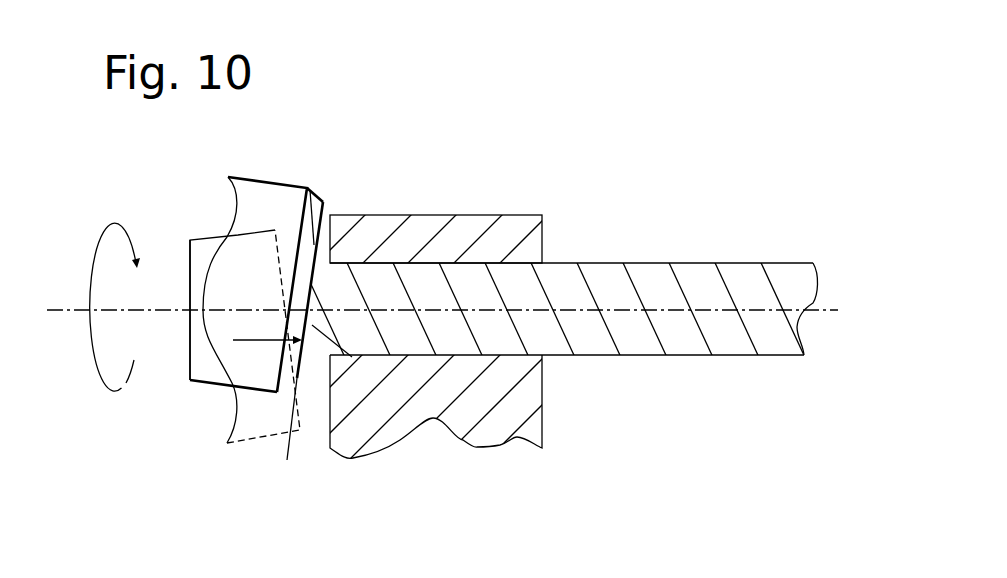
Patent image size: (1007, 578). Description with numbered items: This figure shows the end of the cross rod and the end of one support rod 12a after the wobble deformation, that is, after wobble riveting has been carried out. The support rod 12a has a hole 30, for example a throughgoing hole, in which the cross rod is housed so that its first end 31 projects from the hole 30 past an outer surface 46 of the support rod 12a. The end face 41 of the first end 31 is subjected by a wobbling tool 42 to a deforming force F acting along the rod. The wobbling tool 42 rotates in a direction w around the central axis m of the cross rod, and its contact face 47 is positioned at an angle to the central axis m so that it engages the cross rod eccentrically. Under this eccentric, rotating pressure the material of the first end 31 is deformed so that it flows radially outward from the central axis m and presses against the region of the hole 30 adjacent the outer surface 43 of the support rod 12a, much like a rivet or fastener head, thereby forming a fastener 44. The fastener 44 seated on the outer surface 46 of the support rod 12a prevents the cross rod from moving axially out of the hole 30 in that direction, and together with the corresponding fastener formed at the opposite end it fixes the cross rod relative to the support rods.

The support rod 12a is at (502, 238).
The hole 30 is at (406, 253).
The first end 31 is at (325, 240).
The end face 41 is at (292, 290).
The wobbling tool 42 is at (265, 205).
The outer surface 43 is at (320, 362).
The fastener 44 is at (305, 355).
The outer surface 46 is at (330, 440).
The contact face 47 is at (323, 202).
The central axis m is at (693, 307).
The direction of rotation w is at (105, 307).
The deforming force F is at (267, 328).